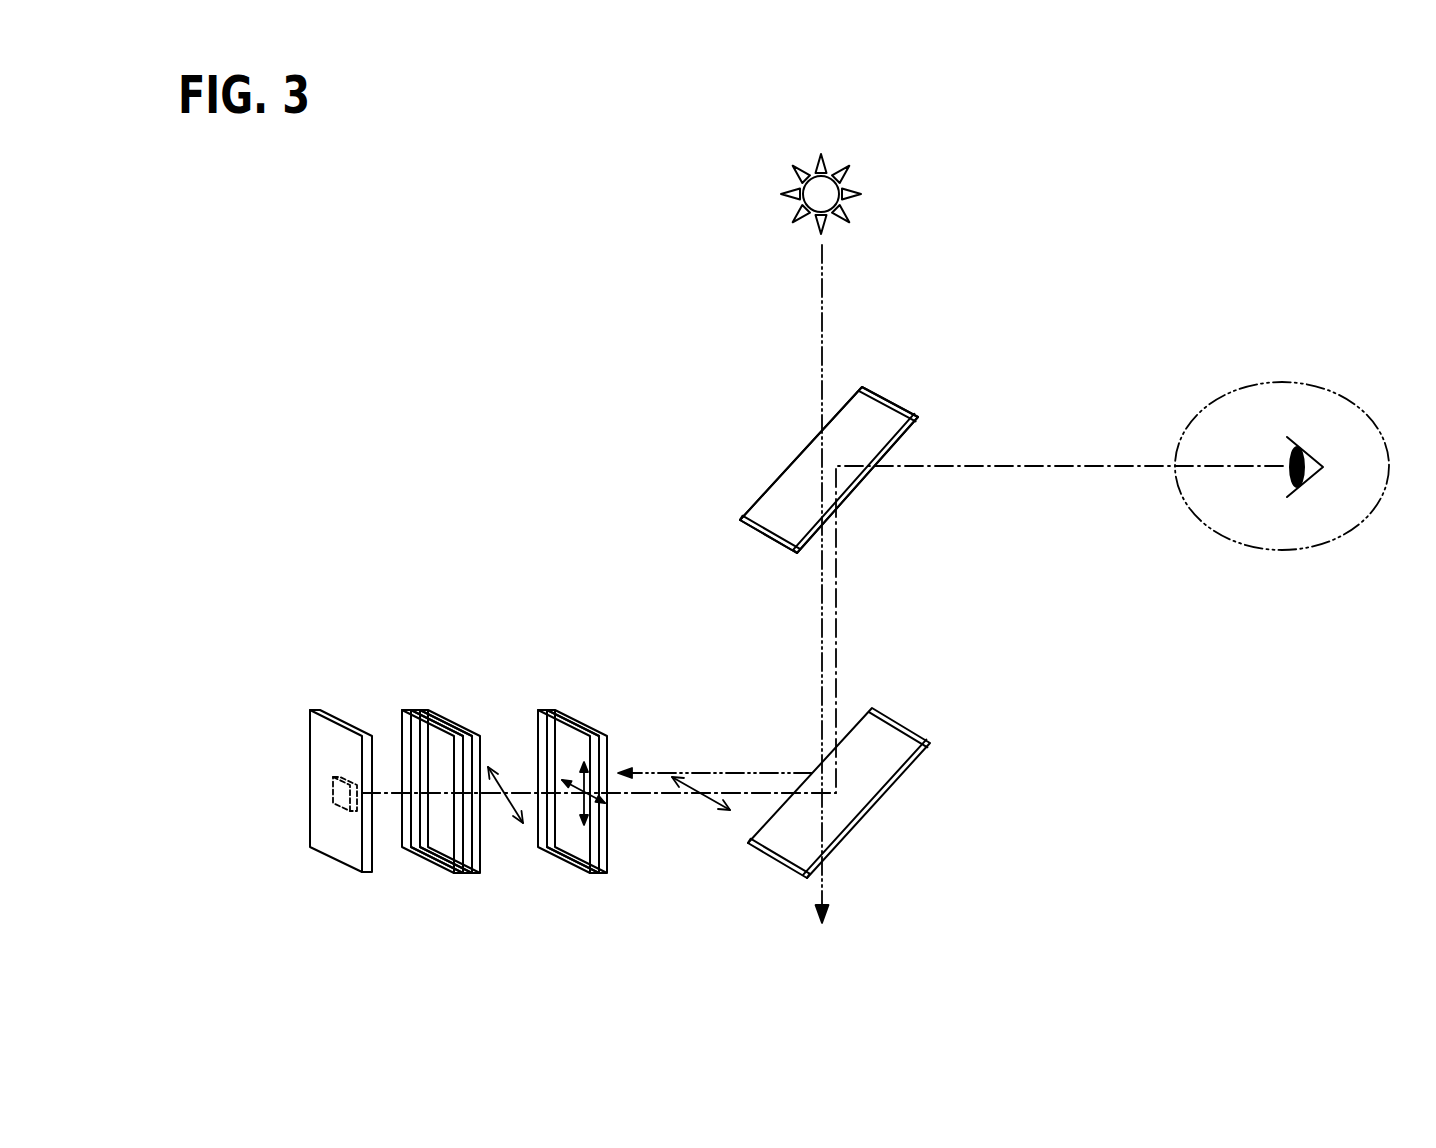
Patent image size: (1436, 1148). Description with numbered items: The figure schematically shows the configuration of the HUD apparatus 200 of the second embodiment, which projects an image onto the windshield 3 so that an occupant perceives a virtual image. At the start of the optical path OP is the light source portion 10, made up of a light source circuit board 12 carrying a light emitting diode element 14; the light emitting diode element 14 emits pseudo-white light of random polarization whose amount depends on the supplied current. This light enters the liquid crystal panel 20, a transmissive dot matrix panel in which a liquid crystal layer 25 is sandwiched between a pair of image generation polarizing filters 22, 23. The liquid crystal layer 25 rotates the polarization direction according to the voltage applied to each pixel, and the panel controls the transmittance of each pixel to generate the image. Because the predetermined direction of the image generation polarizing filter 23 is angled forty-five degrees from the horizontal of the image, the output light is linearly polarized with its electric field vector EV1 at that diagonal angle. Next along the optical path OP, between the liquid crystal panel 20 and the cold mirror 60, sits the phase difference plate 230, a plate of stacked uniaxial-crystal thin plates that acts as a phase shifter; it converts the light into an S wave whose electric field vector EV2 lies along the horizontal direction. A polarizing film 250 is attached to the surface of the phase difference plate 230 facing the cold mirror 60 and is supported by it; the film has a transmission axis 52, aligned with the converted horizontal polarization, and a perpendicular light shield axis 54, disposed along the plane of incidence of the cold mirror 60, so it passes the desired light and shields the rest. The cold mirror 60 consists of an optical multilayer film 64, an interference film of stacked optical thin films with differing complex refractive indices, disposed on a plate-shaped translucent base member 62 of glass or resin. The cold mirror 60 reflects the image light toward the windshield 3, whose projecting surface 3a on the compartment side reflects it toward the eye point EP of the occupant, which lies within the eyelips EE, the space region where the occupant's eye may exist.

The HUD apparatus 200 is at (440, 550).
The light source portion 10 is at (350, 610).
The light source circuit board 12 is at (310, 706).
The light emitting diode element 14 is at (346, 776).
The liquid crystal panel 20 is at (473, 639).
The image generation polarizing filter 22 is at (403, 708).
The liquid crystal layer 25 is at (418, 708).
The image generation polarizing filter 23 is at (421, 708).
The phase difference plate 230 is at (540, 708).
The polarizing film 250 is at (553, 708).
The transmission axis 52 is at (575, 785).
The light shield axis 54 is at (588, 779).
The windshield 3 is at (745, 527).
The projecting surface 3a is at (871, 438).
The cold mirror 60 is at (998, 700).
The translucent base member 62 is at (928, 732).
The optical multilayer film 64 is at (923, 738).
The optical path OP is at (639, 796).
The electric field vector EV1 is at (505, 796).
The electric field vector EV2 is at (701, 794).
The eyelips EE is at (1235, 388).
The eye point EP is at (1300, 447).